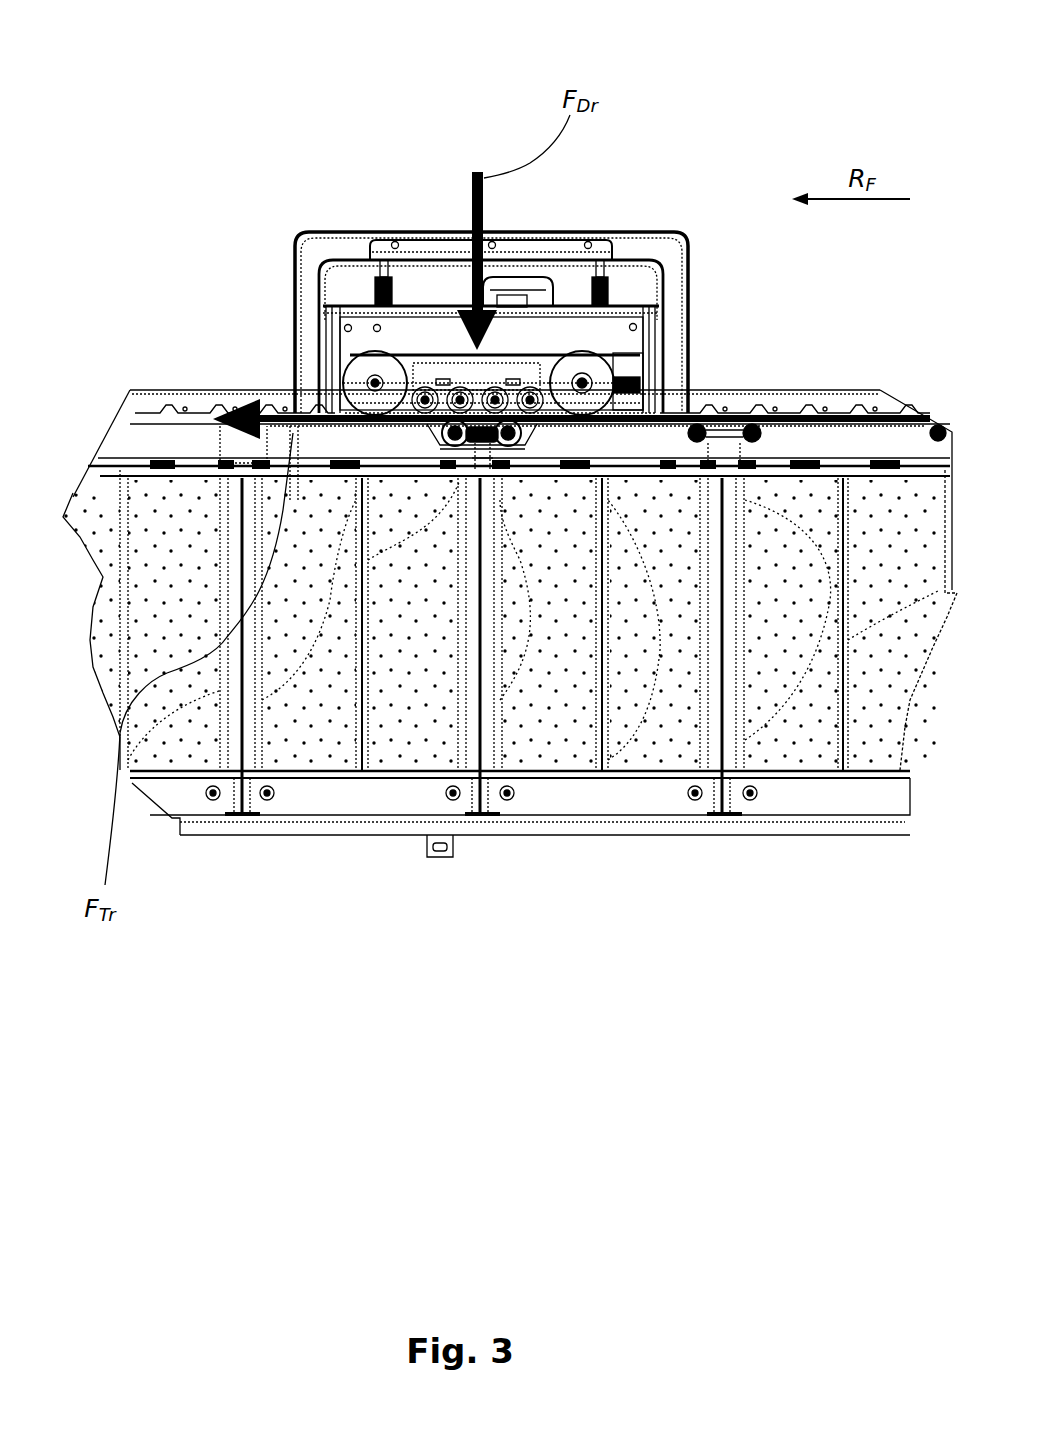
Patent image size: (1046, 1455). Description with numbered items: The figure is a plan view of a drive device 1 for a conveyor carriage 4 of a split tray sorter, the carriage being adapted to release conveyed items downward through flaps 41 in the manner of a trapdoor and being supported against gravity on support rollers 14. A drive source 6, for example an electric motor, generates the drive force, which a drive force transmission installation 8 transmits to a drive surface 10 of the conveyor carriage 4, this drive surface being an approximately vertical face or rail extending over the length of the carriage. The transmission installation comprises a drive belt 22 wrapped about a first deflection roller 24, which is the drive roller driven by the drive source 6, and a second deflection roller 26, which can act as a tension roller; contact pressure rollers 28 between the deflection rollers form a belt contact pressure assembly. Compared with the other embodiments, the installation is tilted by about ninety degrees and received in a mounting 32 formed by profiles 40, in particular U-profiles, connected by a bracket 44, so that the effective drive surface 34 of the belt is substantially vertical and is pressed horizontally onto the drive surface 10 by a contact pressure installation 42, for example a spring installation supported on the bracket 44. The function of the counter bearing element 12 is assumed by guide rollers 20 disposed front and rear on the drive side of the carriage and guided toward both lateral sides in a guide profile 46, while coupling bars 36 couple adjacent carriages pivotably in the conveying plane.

The drive device 1 is at (207, 165).
The conveyor carriage 4 is at (385, 800).
The drive source 6 is at (515, 290).
The drive force transmission installation 8 is at (447, 157).
The drive surface 10 is at (620, 350).
The counter bearing element 12 is at (242, 775).
The support roller 14 is at (458, 445).
The guide roller 20 is at (458, 445).
The drive belt 22 is at (550, 330).
The first deflection roller (drive roller) 24 is at (373, 370).
The second deflection roller 26 is at (587, 370).
The contact pressure roller 28 is at (494, 383).
The mounting 32 is at (697, 333).
The effective drive surface 34 is at (525, 448).
The coupling bar 36 is at (718, 423).
The profile 40 is at (320, 290).
The flap 41 is at (176, 640).
The contact pressure installation 42 is at (422, 233).
The bracket 44 is at (358, 233).
The guide profile 46 is at (537, 450).